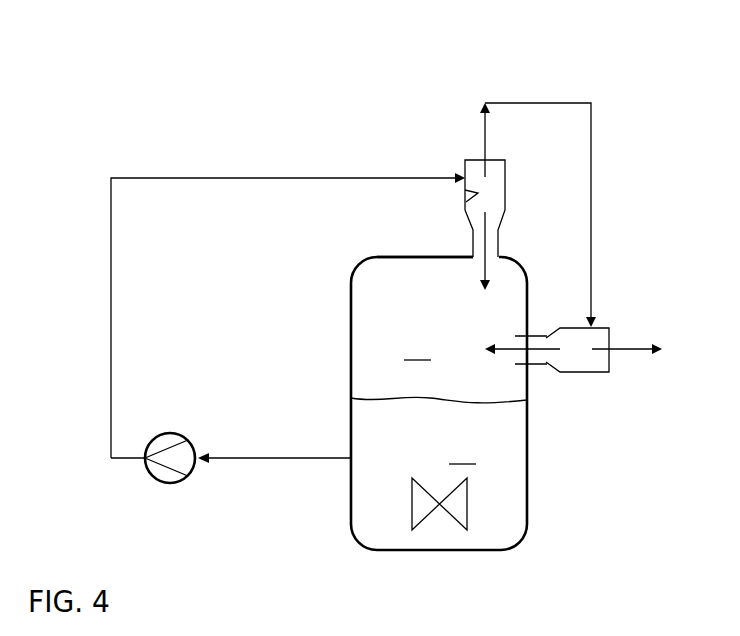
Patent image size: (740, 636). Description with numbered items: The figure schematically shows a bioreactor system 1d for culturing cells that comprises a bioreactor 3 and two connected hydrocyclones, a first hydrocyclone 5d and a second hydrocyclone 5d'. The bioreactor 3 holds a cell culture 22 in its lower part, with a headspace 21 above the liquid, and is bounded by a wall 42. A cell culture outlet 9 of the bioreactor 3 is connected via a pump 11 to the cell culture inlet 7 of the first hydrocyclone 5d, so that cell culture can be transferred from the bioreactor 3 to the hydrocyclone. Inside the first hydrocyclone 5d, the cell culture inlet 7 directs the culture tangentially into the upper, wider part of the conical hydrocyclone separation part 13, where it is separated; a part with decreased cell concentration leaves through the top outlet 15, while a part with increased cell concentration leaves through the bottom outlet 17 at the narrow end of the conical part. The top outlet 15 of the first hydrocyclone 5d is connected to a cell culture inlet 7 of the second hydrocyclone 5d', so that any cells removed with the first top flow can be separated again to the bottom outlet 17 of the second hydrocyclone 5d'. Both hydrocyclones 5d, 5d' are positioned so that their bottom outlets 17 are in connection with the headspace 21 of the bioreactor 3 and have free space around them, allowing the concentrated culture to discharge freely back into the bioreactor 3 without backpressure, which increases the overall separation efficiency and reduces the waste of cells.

The bioreactor system 1d is at (273, 101).
The bioreactor 3 is at (348, 345).
The first hydrocyclone 5d is at (510, 188).
The second hydrocyclone 5d' is at (573, 387).
The cell culture inlet 7 is at (459, 176).
The cell culture outlet 9 is at (348, 462).
The pump 11 is at (162, 485).
The hydrocyclone separation part 13 is at (478, 193).
The top outlet 15 is at (480, 158).
The bottom outlet 17 is at (538, 346).
The headspace 21 is at (417, 349).
The cell culture 22 is at (444, 485).
The wall 42 is at (400, 257).